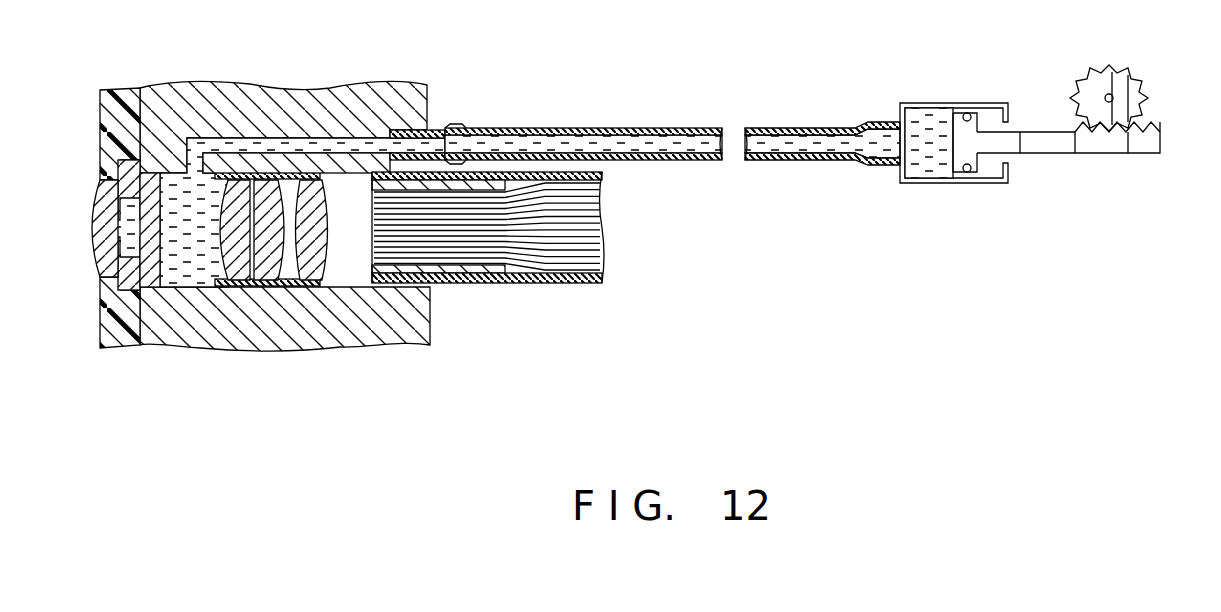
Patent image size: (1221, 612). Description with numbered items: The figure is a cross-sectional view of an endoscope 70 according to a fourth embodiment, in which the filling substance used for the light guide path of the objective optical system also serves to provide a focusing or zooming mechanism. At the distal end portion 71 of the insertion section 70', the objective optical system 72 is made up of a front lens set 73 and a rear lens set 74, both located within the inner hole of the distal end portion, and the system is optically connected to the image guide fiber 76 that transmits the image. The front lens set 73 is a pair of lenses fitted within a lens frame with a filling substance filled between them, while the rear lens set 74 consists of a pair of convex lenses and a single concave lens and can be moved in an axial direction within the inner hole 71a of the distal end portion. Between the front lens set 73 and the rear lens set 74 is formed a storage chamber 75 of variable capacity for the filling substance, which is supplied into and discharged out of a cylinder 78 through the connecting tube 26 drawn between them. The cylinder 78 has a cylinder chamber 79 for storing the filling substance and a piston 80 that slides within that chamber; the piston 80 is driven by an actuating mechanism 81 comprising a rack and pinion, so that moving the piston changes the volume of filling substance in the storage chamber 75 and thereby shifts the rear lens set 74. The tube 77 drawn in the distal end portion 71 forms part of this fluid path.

The liquid / flexible tube 26 is at (178, 178).
The endoscope 70 is at (805, 103).
The insertion section 70' is at (583, 102).
The distal end portion 71 is at (258, 75).
The inner hole 71a is at (352, 276).
The objective optical system 72 is at (92, 193).
The front lens set 73 is at (91, 255).
The rear lens set 74 is at (243, 290).
The storage chamber 75 is at (186, 278).
The image guide fiber 76 is at (538, 250).
The rigid tube 77 is at (373, 145).
The cylinder 78 is at (940, 105).
The cylinder chamber 79 is at (937, 172).
The piston 80 is at (977, 158).
The actuating mechanism 81 is at (1150, 120).